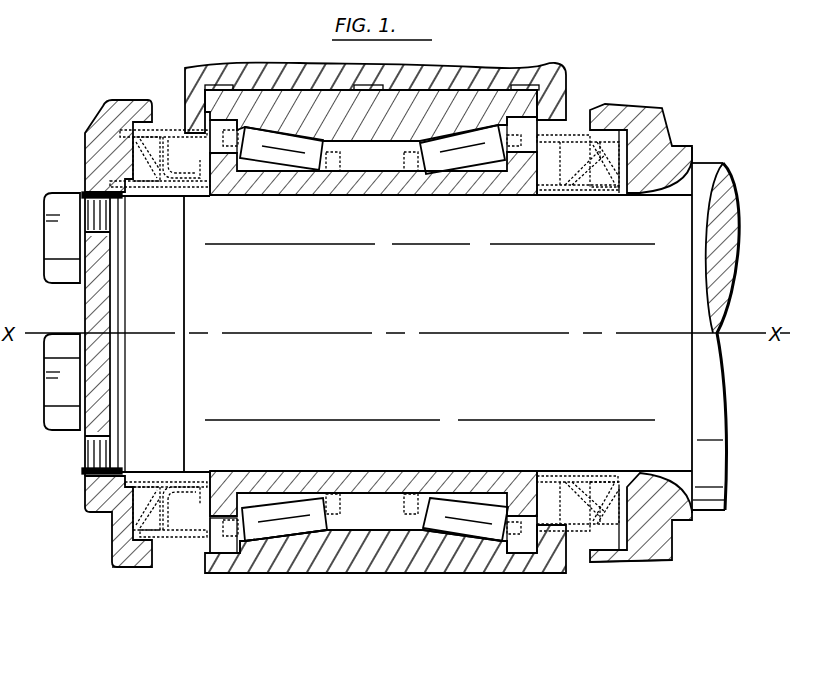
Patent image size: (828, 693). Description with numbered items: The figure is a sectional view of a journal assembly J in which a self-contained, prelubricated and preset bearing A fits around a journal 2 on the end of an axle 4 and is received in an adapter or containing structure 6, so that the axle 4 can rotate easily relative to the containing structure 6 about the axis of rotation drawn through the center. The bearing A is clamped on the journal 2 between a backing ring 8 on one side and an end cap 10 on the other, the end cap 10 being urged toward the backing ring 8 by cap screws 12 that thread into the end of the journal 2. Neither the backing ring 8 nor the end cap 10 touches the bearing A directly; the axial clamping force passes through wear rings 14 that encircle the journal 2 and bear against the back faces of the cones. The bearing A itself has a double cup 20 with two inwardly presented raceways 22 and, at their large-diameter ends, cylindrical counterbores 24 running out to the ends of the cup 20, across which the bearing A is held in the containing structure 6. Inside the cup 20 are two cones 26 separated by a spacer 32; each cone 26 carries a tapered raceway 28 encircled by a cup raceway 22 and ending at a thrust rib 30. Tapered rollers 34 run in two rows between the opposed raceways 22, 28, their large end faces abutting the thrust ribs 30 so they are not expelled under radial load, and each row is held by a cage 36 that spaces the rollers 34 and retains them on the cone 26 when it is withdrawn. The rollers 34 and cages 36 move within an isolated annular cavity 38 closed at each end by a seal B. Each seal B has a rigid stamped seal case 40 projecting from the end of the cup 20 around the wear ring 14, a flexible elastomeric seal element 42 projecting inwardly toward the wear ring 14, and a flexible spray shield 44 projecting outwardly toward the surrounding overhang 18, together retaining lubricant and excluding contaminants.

The journal 2 is at (430, 332).
The axle 4 is at (738, 205).
The containing structure 6 is at (483, 75).
The backing ring 8 is at (666, 118).
The end cap 10 is at (103, 130).
The cap screws 12 is at (55, 195).
The wear rings 14 is at (602, 243).
The overhang 18 is at (150, 567).
The double cup 20 is at (273, 105).
The raceways 22 is at (283, 545).
The cylindrical counterbores 24 is at (202, 555).
The cones 26 is at (276, 190).
The tapered raceway 28 is at (266, 510).
The thrust rib 30 is at (226, 505).
The spacer 32 is at (376, 193).
The tapered rollers 34 is at (305, 186).
The cage 36 is at (340, 498).
The annular cavity 38 is at (366, 470).
The seal case 40 is at (165, 125).
The flexible seal element 42 is at (166, 178).
The flexible spray shield 44 is at (112, 130).
The bearing A is at (370, 580).
The seals B is at (178, 158).
The journal assembly J is at (91, 534).